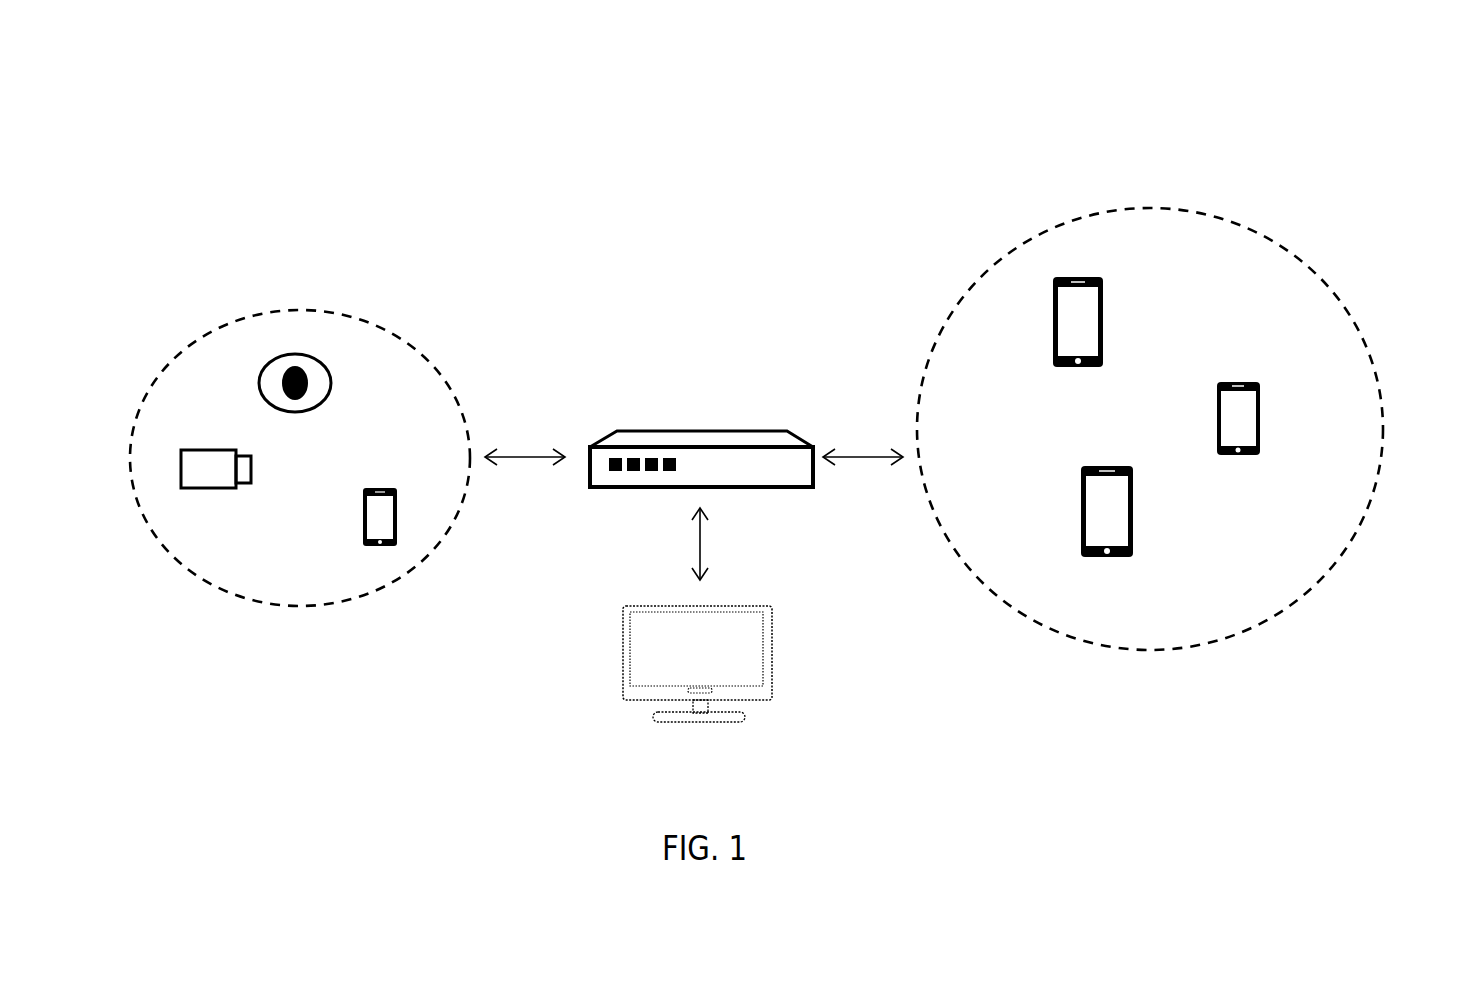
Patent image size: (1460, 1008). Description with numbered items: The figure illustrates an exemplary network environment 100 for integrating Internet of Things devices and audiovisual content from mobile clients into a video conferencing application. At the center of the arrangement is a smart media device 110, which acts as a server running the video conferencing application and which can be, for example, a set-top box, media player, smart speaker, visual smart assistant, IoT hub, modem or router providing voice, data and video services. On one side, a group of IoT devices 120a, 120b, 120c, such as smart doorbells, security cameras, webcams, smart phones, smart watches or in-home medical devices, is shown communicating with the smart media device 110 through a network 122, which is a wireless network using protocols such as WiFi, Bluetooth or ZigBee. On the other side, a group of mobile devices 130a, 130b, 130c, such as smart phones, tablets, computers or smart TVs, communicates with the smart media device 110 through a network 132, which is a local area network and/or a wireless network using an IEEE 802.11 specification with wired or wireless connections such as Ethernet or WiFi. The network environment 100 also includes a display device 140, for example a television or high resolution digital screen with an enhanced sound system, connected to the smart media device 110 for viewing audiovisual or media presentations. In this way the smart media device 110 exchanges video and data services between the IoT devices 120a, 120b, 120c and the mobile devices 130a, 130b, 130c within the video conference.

The network environment 100 is at (1175, 92).
The smart media device 110 is at (688, 388).
The network 122 is at (517, 410).
The network 132 is at (852, 414).
The IoT device 120a is at (311, 325).
The IoT device 120b is at (189, 530).
The IoT device 120c is at (421, 558).
The mobile device 130a is at (1031, 268).
The mobile device 130b is at (1275, 381).
The mobile device 130c is at (1060, 568).
The display device 140 is at (608, 712).